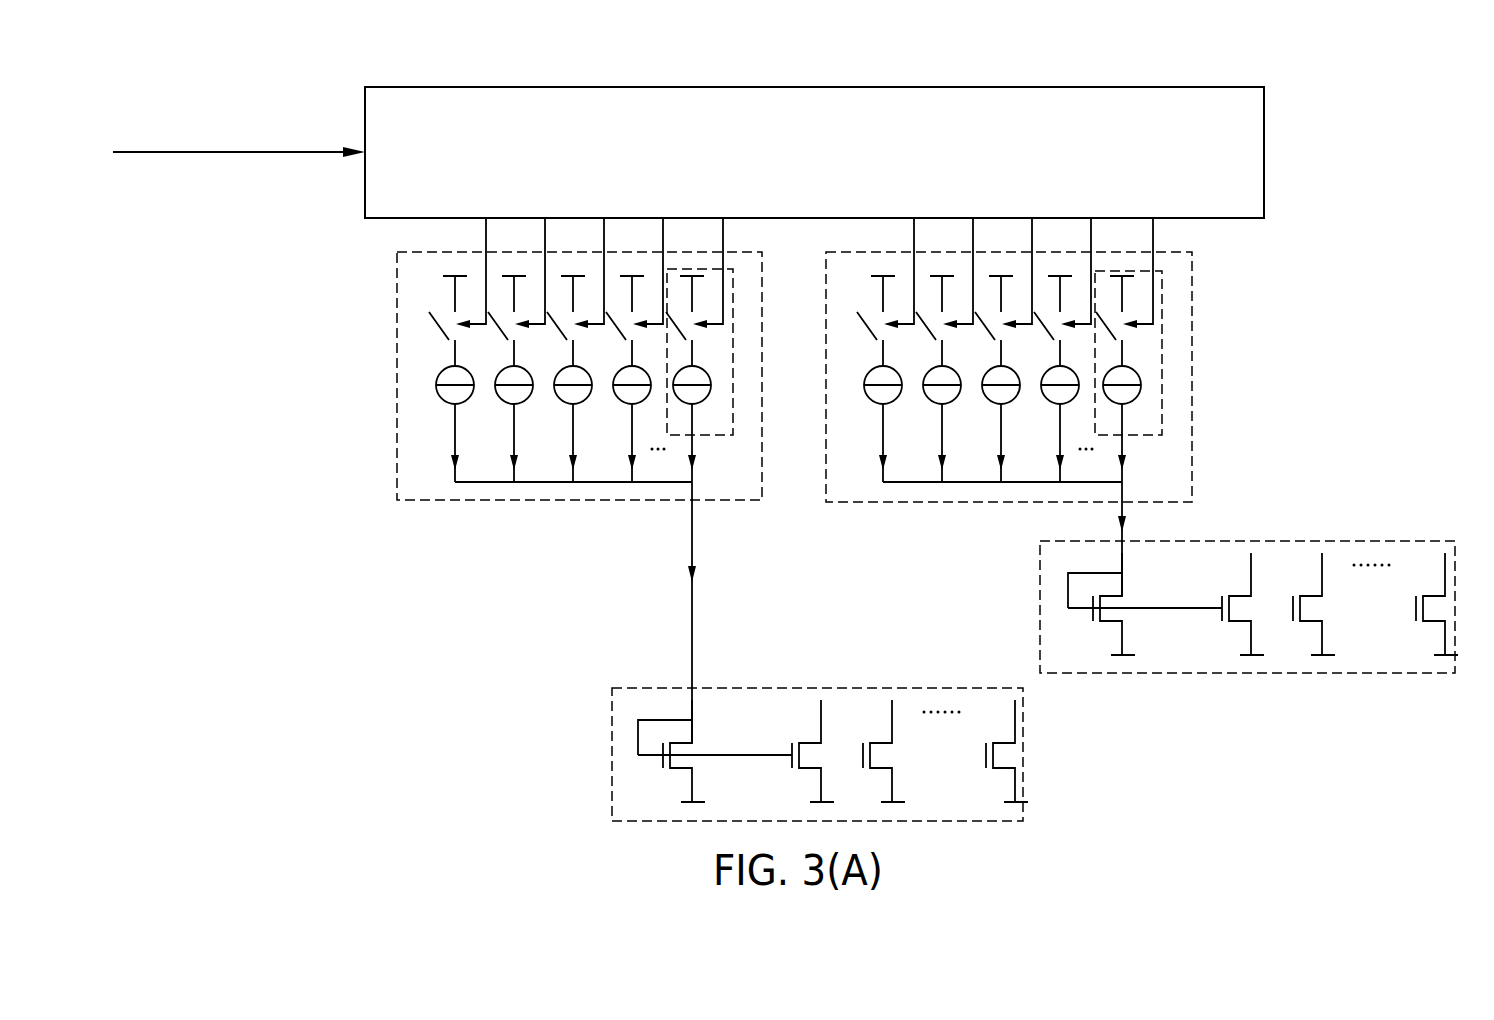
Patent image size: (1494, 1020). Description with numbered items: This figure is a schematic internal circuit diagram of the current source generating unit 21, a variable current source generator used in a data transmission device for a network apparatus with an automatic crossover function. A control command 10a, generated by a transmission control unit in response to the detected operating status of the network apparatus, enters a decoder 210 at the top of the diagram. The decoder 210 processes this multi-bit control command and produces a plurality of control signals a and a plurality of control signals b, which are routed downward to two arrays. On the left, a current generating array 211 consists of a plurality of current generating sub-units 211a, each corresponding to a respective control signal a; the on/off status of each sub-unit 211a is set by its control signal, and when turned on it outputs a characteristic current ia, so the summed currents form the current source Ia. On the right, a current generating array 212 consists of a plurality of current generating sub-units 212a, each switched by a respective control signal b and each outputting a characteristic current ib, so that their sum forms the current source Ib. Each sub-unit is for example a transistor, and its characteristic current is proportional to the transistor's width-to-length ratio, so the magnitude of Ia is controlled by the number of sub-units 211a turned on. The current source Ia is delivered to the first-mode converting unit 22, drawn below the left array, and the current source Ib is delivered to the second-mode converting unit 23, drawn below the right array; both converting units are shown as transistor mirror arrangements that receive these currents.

The control command 10a is at (206, 165).
The current source generating unit 21 is at (1328, 142).
The decoder 210 is at (858, 87).
The current generating array 211 is at (558, 398).
The current generating sub-unit 211a is at (735, 365).
The current generating array 212 is at (1078, 360).
The current generating sub-unit 212a is at (1164, 365).
The first-mode converting unit 22 is at (817, 688).
The second-mode converting unit 23 is at (1247, 541).